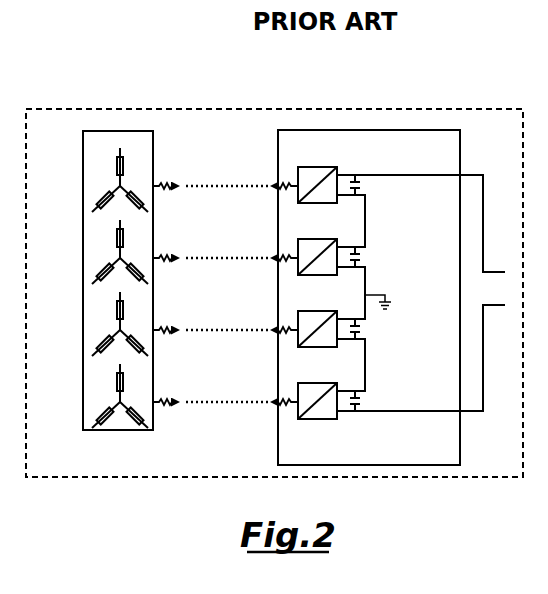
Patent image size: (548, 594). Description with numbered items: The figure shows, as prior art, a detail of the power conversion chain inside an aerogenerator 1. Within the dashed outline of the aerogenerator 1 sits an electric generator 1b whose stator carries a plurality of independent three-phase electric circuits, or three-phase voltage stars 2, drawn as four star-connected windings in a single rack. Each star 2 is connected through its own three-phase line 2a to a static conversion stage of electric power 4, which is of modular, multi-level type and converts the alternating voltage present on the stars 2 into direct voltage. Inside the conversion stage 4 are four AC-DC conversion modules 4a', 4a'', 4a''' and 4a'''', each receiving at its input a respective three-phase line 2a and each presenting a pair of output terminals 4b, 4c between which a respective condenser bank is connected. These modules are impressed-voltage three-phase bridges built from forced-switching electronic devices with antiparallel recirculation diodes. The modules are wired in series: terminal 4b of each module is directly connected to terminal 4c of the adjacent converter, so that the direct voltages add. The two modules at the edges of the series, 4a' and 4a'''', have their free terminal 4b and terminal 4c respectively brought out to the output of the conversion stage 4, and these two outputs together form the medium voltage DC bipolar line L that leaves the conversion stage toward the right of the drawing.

The aerogenerator 1 is at (50, 103).
The electric generator 1b is at (121, 433).
The stator independent three-phase electric circuit 2 is at (111, 184).
The three-phase line 2a is at (160, 180).
The static conversion stage of electric power 4 is at (273, 428).
The AC-DC conversion module 4a' is at (328, 177).
The AC-DC conversion module 4a'' is at (292, 243).
The AC-DC conversion module 4a''' is at (331, 317).
The AC-DC conversion module 4a'''' is at (314, 389).
The output terminal 4b is at (363, 170).
The output terminal 4c is at (344, 201).
The medium voltage DC bipolar line L is at (490, 266).